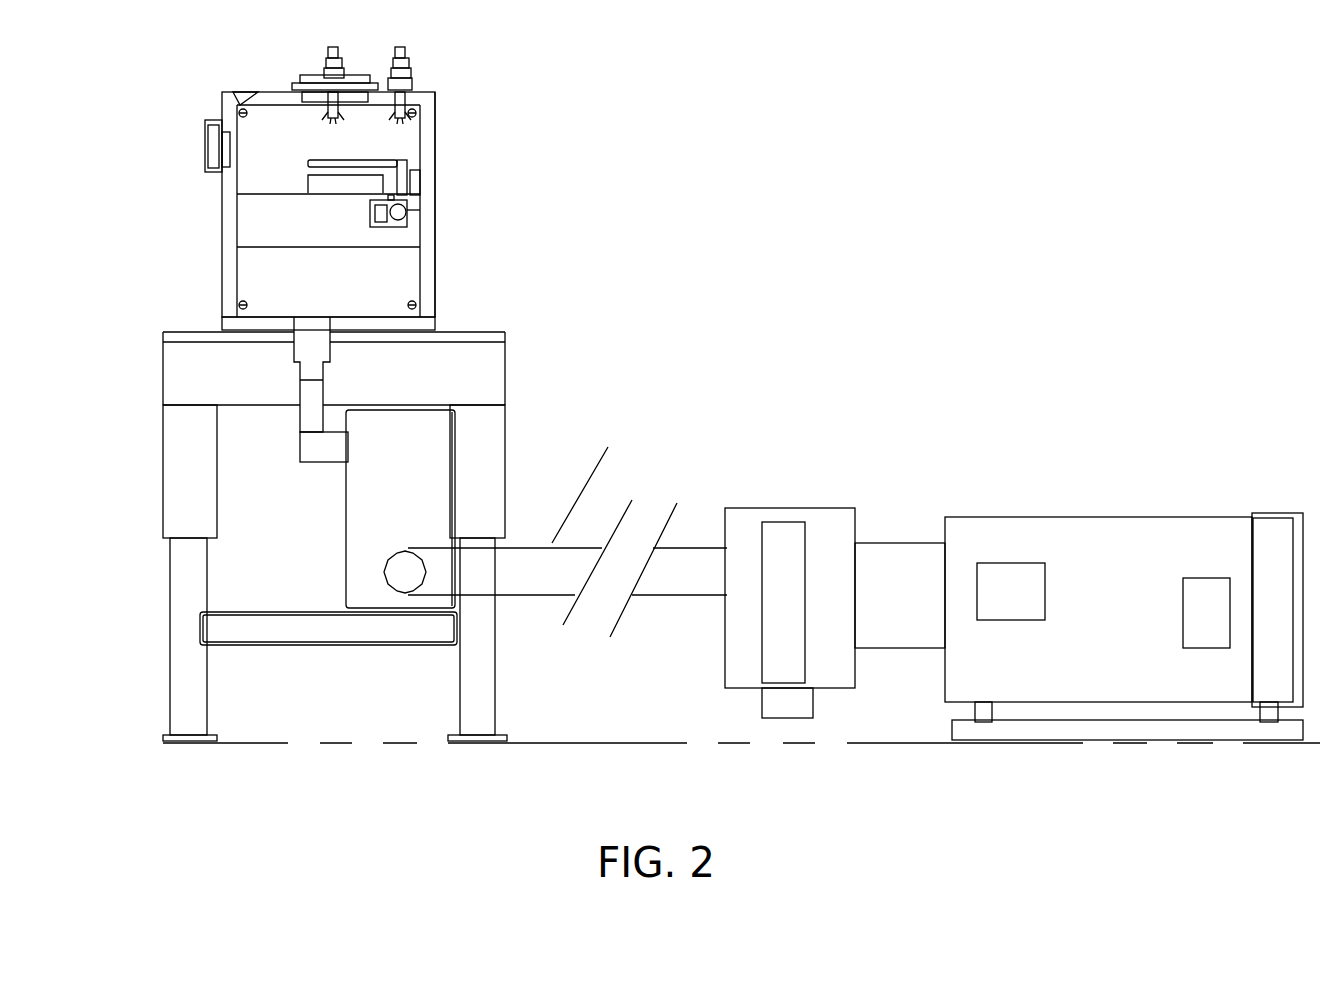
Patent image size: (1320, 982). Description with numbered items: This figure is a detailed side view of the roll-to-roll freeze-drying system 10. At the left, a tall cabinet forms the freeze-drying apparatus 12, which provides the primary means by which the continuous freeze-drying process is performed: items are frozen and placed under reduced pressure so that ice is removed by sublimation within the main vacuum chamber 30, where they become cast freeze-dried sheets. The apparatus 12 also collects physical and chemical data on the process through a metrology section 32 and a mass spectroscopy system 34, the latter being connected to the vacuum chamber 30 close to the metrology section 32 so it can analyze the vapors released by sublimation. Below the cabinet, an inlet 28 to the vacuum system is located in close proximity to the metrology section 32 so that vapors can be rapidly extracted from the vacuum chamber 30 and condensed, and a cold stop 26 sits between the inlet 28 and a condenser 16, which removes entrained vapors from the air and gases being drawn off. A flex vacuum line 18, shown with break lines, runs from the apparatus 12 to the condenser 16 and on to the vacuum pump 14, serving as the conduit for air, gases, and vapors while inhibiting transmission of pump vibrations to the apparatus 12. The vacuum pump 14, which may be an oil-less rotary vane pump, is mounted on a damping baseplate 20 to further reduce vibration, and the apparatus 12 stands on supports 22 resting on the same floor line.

The system 10 is at (757, 207).
The freeze-drying apparatus 12 is at (487, 150).
The vacuum pump 14 is at (1122, 515).
The condenser 16 is at (822, 532).
The flex vacuum line 18 is at (555, 526).
The damping baseplate 20 is at (1115, 728).
The support legs 22 is at (175, 742).
The cold stop 26 is at (309, 419).
The inlet 28 is at (369, 538).
The main vacuum chamber 30 is at (370, 210).
The metrology section 32 is at (437, 230).
The mass spectroscopy system 34 is at (352, 282).